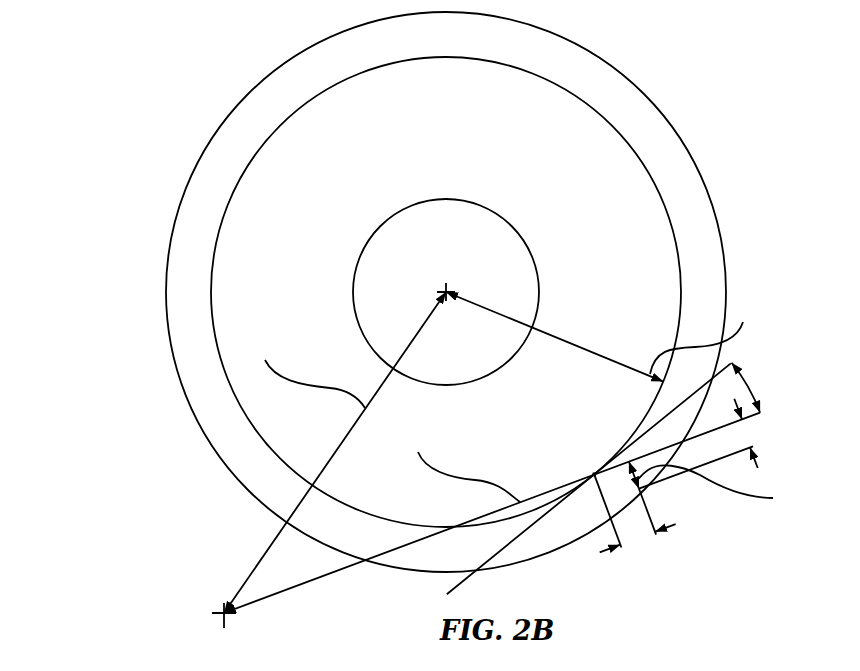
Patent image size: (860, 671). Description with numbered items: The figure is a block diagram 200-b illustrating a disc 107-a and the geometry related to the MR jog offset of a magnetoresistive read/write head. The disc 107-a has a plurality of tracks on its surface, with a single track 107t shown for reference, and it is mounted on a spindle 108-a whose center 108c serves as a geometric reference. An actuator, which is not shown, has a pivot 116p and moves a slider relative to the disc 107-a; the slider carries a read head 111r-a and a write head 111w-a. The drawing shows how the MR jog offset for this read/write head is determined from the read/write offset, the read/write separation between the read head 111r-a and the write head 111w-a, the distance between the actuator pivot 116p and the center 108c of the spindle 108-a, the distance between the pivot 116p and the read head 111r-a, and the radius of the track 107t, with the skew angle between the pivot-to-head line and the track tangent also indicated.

The block diagram 200-b is at (135, 110).
The disc 107-a is at (633, 81).
The track 107t is at (643, 158).
The spindle 108-a is at (467, 199).
The center of the spindle 108c is at (448, 290).
The read head 111r-a is at (594, 474).
The write head 111w-a is at (640, 490).
The pivot 116p is at (222, 612).